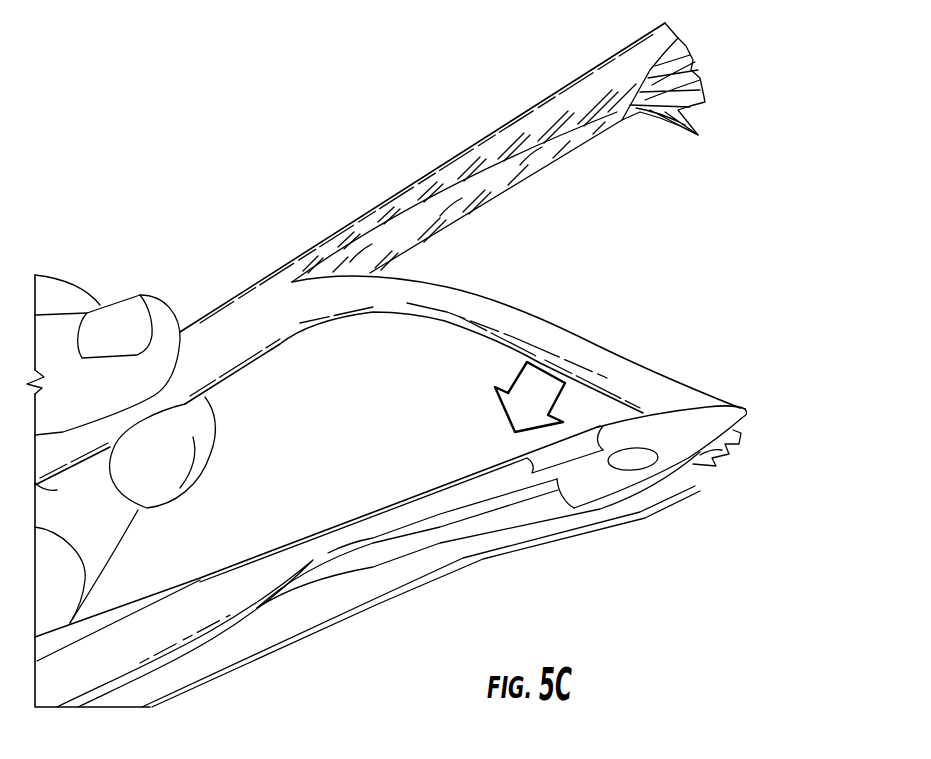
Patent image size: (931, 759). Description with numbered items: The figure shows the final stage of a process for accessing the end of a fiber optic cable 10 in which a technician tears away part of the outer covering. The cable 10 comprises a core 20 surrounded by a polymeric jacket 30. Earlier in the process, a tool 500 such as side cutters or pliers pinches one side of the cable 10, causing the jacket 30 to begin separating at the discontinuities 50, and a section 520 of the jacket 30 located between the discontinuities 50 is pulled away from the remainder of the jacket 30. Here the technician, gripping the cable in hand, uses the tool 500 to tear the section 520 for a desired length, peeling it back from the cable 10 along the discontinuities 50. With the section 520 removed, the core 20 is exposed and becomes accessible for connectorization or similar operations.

The fiber optic cable 10 is at (218, 258).
The core 20 is at (588, 181).
The jacket 30 is at (233, 367).
The discontinuities 50 is at (555, 152).
The tool 500 is at (638, 462).
The section 520 is at (692, 375).